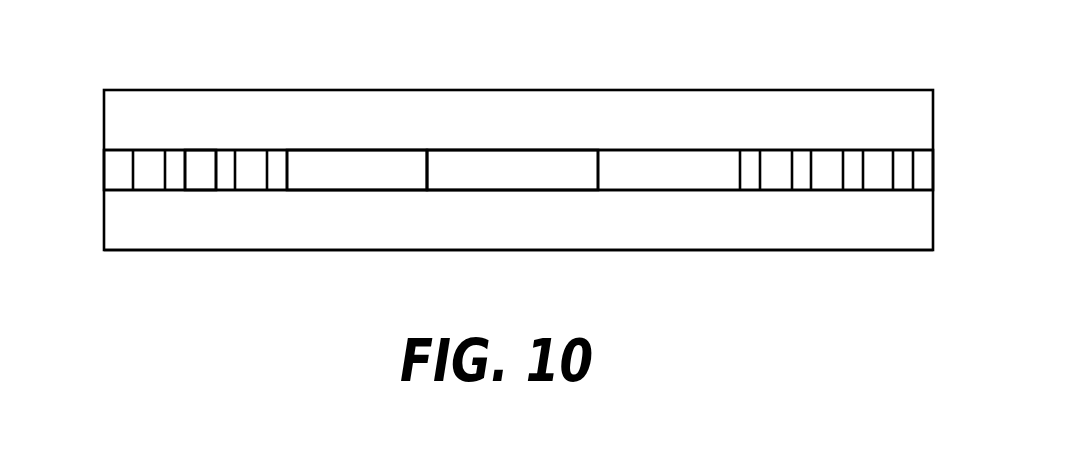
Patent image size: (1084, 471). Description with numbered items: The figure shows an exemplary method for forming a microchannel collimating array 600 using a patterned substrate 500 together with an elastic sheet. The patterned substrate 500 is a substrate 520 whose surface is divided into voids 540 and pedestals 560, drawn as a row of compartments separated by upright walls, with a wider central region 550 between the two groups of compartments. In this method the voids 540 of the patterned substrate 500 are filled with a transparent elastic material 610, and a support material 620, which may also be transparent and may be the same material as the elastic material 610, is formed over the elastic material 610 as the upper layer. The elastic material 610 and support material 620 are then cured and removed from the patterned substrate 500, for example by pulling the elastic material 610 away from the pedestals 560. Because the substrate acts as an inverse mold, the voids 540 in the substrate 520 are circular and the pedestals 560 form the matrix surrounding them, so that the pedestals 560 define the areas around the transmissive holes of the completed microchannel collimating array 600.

The patterned substrate 500 is at (738, 273).
The substrate 520 is at (142, 235).
The voids 540 is at (315, 190).
The central cell region 550 is at (515, 173).
The pedestals 560 is at (275, 157).
The microchannel collimating array 600 is at (740, 70).
The elastic material 610 is at (200, 158).
The support material 620 is at (452, 90).